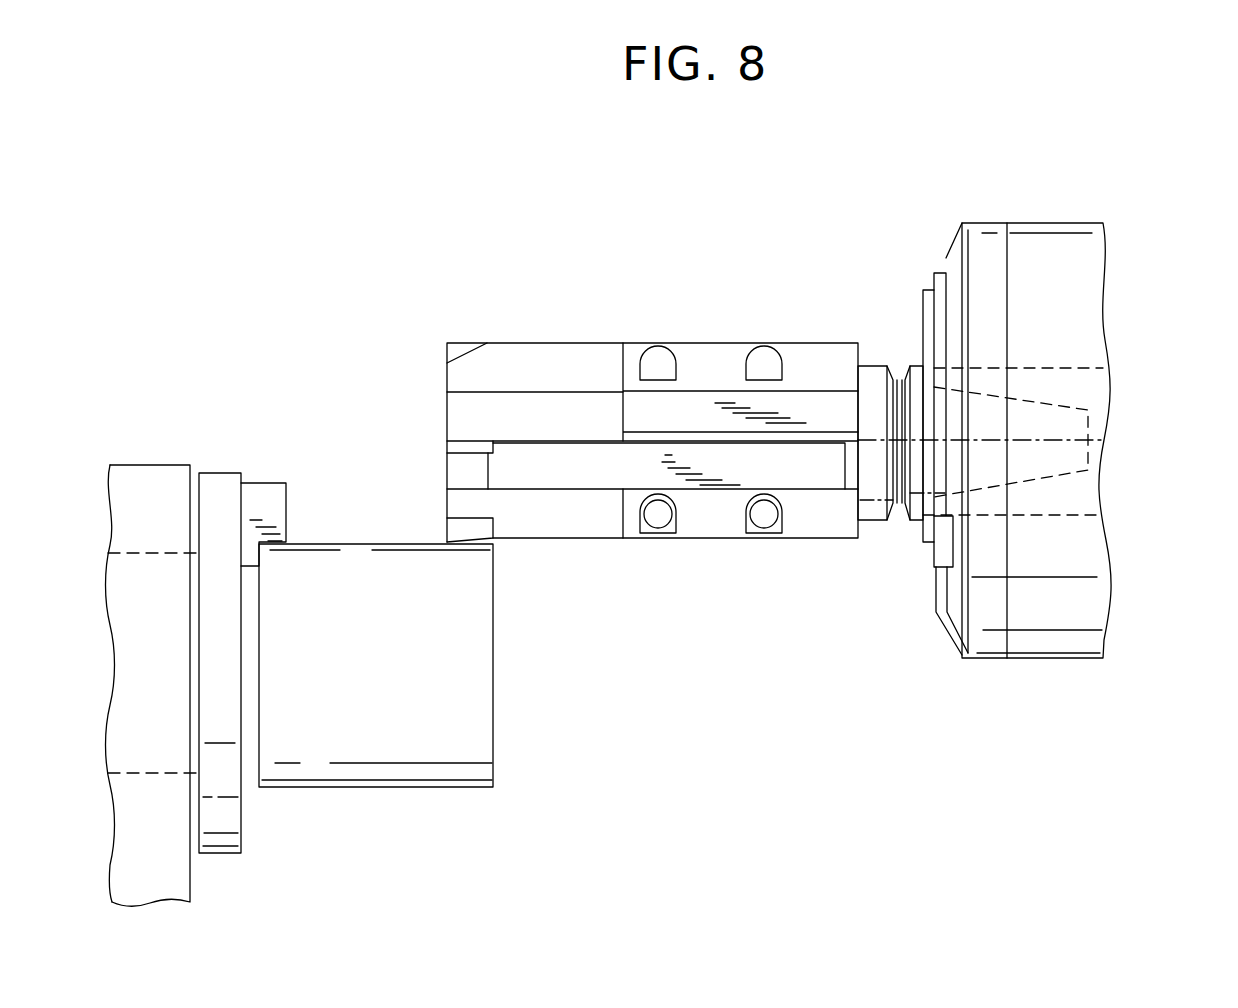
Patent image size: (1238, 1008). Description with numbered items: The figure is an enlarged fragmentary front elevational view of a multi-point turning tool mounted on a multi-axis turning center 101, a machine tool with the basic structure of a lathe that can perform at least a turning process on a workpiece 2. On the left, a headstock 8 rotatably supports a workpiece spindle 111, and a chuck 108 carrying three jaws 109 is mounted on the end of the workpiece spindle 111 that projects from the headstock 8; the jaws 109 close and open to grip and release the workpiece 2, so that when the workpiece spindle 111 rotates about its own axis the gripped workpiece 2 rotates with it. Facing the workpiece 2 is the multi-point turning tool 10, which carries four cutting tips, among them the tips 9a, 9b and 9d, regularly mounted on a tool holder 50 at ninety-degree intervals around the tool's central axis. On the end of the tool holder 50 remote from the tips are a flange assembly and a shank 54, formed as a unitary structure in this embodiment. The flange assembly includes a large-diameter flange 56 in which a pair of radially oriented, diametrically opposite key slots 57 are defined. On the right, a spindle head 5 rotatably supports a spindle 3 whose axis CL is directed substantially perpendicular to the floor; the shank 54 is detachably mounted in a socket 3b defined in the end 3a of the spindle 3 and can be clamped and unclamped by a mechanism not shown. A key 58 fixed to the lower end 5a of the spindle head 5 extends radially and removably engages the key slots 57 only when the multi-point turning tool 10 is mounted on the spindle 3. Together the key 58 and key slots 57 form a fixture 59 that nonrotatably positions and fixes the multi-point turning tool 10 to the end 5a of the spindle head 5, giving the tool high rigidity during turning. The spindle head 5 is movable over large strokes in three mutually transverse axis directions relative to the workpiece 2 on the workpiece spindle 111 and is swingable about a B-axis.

The multi-axis turning center 101 is at (1102, 132).
The headstock 8 is at (150, 465).
The workpiece spindle 111 is at (123, 552).
The chuck 108 is at (241, 824).
The jaws 109 is at (286, 508).
The workpiece 2 is at (493, 731).
The multi-point turning tool 10 is at (593, 332).
The tip 9d is at (458, 350).
The tip 9a is at (468, 440).
The tip 9b is at (455, 528).
The tool holder 50 is at (697, 344).
The key slots 57 is at (921, 350).
The large-diameter flange 56 is at (920, 530).
The key 58 is at (922, 305).
The fixture 59 is at (908, 280).
The lower end of spindle head 5a is at (937, 282).
The spindle head 5 is at (1045, 224).
The shank 54 is at (1015, 385).
The spindle 3 is at (1053, 367).
The axis of spindle CL is at (1055, 437).
The socket 3b is at (1050, 472).
The end of spindle 3a is at (933, 475).